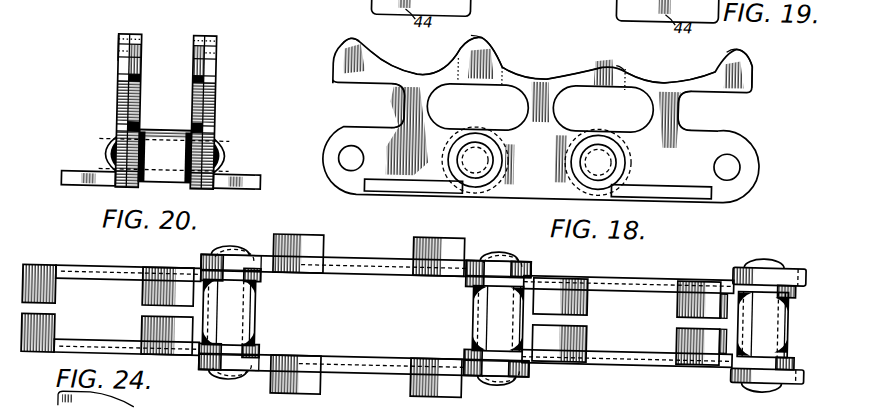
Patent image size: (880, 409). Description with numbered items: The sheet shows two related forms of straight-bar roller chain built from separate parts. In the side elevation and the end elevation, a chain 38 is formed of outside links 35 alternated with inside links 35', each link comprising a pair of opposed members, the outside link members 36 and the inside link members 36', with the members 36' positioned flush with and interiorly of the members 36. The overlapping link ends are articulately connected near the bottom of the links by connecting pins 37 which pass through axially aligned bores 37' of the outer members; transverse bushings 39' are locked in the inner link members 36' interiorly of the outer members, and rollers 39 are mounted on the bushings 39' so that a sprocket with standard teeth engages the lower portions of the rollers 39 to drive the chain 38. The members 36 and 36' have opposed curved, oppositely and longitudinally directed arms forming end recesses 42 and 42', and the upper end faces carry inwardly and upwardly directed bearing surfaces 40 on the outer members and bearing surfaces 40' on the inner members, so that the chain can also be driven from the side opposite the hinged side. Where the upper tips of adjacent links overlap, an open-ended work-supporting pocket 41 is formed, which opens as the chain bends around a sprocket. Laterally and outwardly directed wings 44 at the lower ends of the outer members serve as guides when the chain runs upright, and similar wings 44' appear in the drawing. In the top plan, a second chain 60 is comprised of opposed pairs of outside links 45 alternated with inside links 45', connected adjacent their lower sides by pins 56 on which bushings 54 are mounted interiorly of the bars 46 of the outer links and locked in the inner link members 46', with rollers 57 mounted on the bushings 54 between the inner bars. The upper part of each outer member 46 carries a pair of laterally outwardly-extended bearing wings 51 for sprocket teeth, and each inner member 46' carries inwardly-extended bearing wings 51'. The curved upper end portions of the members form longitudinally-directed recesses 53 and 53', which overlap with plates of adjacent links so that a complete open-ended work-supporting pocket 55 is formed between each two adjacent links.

In FIG. 18, the outside links 35 is at (543, 59).
In FIG. 18, the inside links 35' is at (552, 59).
In FIG. 20, the outside link members 36 is at (163, 111).
In FIG. 18, the outside link members 36 is at (544, 123).
In FIG. 20, the inside link members 36' is at (165, 115).
In FIG. 18, the inside link members 36' is at (479, 150).
In FIG. 20, the connecting pins 37 is at (186, 172).
In FIG. 18, the connecting pins 37 is at (564, 161).
In FIG. 20, the bore of outside link member 37' is at (140, 144).
In FIG. 18, the bore of outside link member 37' is at (554, 169).
In FIG. 20, the chain 38 is at (93, 55).
In FIG. 18, the chain 38 is at (751, 62).
In FIG. 20, the rollers 39 is at (165, 139).
In FIG. 18, the rollers 39 is at (550, 159).
In FIG. 20, the transverse bushings 39' is at (165, 138).
In FIG. 20, the bearing surfaces of outside link members 40 is at (167, 50).
In FIG. 18, the bearing surfaces of outside link members 40 is at (543, 46).
In FIG. 20, the bearing surfaces of inside link members 40' is at (167, 48).
In FIG. 18, the bearing surfaces of inside link members 40' is at (550, 54).
In FIG. 18, the work-supporting pocket 41 is at (540, 107).
In FIG. 20, the end recesses of outside link members 42 is at (161, 103).
In FIG. 18, the end recesses of outside link members 42 is at (541, 109).
In FIG. 20, the end recesses of inside link members 42' is at (166, 103).
In FIG. 18, the end recesses of inside link members 42' is at (587, 114).
In FIG. 20, the wings 44 is at (157, 171).
In FIG. 18, the wings 44 is at (661, 200).
In FIG. 18, the bearing strip 44' is at (413, 197).
In FIG. 24, the outside links 45 is at (365, 292).
In FIG. 24, the inside links 45' is at (355, 306).
In FIG. 24, the bars of outer links 46 is at (568, 318).
In FIG. 24, the inner link members 46' is at (393, 319).
In FIG. 24, the outwardly-extended bearing wings 51 is at (367, 300).
In FIG. 24, the inwardly-extended bearing wings 51' is at (417, 316).
In FIG. 24, the recesses of outer link members 53 is at (365, 307).
In FIG. 24, the recesses of inner link members 53' is at (364, 319).
In FIG. 24, the bushings 54 is at (250, 299).
In FIG. 24, the work-supporting pocket 55 is at (230, 253).
In FIG. 24, the pins 56 is at (257, 311).
In FIG. 24, the rollers 57 is at (257, 332).
In FIG. 24, the chain 60 is at (344, 253).